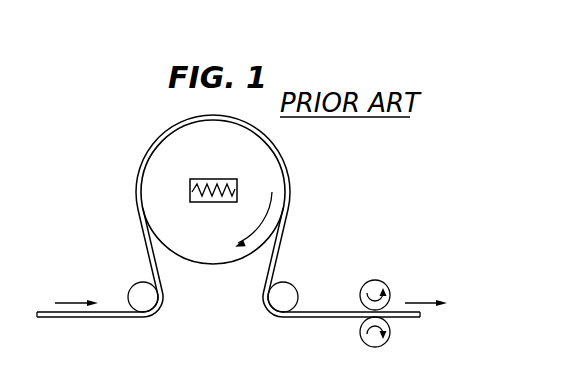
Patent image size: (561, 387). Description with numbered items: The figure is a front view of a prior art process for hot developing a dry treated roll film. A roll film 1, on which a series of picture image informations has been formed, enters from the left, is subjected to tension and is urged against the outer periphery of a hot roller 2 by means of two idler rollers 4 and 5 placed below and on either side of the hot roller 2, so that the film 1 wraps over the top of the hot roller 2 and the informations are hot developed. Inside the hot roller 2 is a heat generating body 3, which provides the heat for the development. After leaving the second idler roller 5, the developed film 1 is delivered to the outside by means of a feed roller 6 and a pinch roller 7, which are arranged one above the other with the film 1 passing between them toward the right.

The roll film 1 is at (82, 317).
The hot roller 2 is at (280, 212).
The heat generating body 3 is at (237, 179).
The idler roller 4 is at (135, 293).
The idler roller 5 is at (288, 293).
The feed roller 6 is at (378, 291).
The pinch roller 7 is at (377, 338).